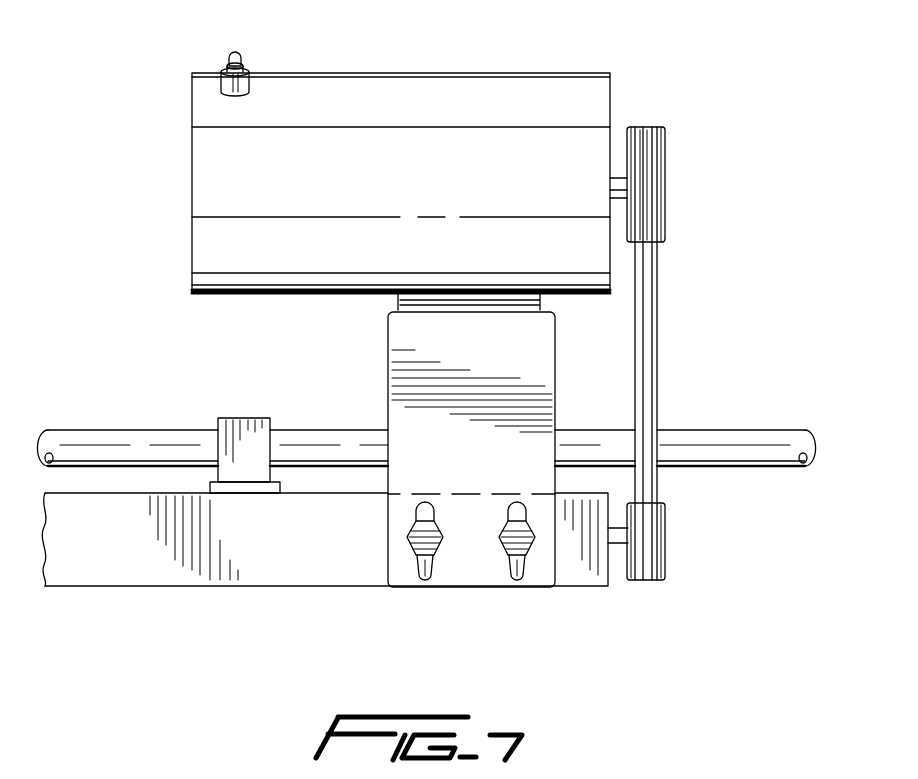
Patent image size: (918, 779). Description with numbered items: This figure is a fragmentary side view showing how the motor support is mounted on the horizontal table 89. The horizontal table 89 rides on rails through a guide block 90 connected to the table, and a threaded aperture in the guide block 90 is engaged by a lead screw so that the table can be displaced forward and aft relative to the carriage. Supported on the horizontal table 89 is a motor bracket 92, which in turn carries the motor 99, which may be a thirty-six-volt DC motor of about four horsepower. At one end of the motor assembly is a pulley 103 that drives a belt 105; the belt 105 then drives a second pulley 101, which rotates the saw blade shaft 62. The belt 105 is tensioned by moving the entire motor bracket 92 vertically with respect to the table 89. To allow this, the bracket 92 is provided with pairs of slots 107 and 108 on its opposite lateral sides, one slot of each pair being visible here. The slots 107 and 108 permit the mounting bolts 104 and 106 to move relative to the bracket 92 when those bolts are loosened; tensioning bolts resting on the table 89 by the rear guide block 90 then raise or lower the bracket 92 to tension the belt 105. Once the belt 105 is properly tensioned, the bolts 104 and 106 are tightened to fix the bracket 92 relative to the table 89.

The motor 99 is at (545, 95).
The pulley 103 is at (665, 130).
The belt 105 is at (655, 345).
The motor bracket 92 is at (410, 345).
The guide block 90 is at (251, 418).
The horizontal table 89 is at (202, 587).
The slot 107 is at (412, 502).
The slot 108 is at (500, 502).
The mounting bolt 104 is at (440, 548).
The mounting bolt 106 is at (526, 548).
The saw blade shaft 62 is at (620, 550).
The pulley 101 is at (668, 513).